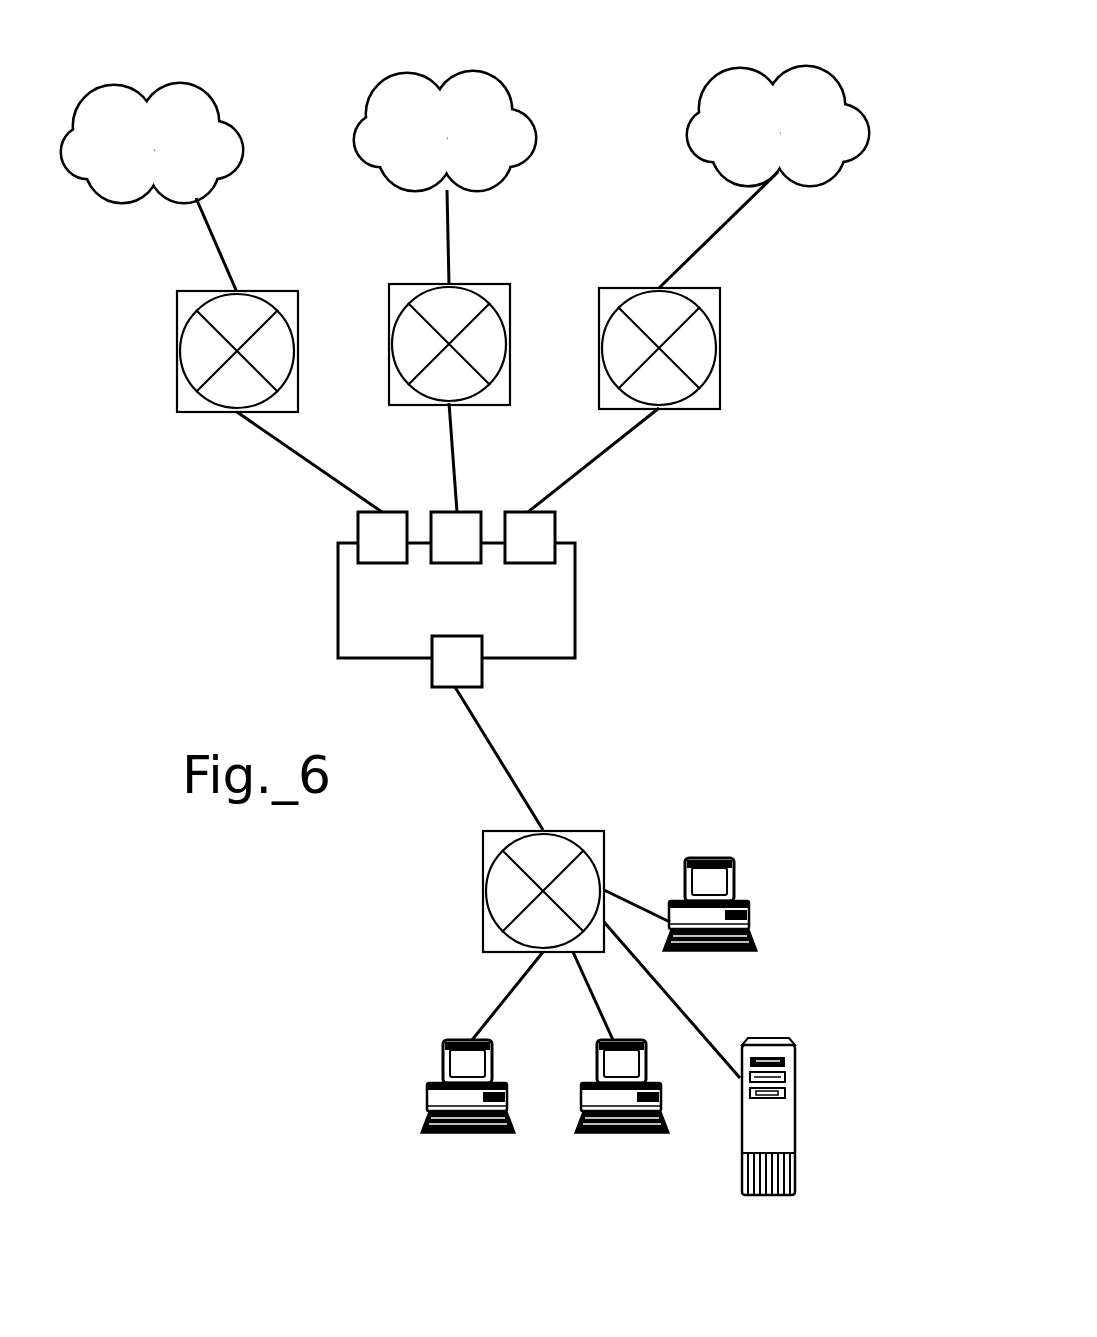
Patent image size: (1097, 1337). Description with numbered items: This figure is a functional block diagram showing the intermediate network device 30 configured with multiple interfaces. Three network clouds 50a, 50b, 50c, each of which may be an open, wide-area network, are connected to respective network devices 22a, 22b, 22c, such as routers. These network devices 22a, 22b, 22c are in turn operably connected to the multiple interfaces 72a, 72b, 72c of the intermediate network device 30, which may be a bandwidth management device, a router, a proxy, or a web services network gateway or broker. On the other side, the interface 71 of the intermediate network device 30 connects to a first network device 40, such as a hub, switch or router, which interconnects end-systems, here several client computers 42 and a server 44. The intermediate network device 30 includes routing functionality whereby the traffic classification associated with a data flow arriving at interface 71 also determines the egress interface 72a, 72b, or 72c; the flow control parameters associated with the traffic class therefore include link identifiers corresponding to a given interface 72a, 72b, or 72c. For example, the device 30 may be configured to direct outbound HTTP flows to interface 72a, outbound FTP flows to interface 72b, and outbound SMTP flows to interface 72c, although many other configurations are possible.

The network cloud 50a is at (243, 143).
The network cloud 50b is at (537, 130).
The network cloud 50c is at (868, 124).
The network device 22a is at (298, 350).
The network device 22b is at (512, 343).
The network device 22c is at (722, 348).
The intermediate network device 30 is at (575, 598).
The interface 72a is at (358, 526).
The interface 72b is at (440, 512).
The interface 72c is at (517, 512).
The network interface 71 is at (482, 675).
The first network device 40 is at (483, 890).
The client computer 42 is at (708, 858).
The server 44 is at (795, 1156).